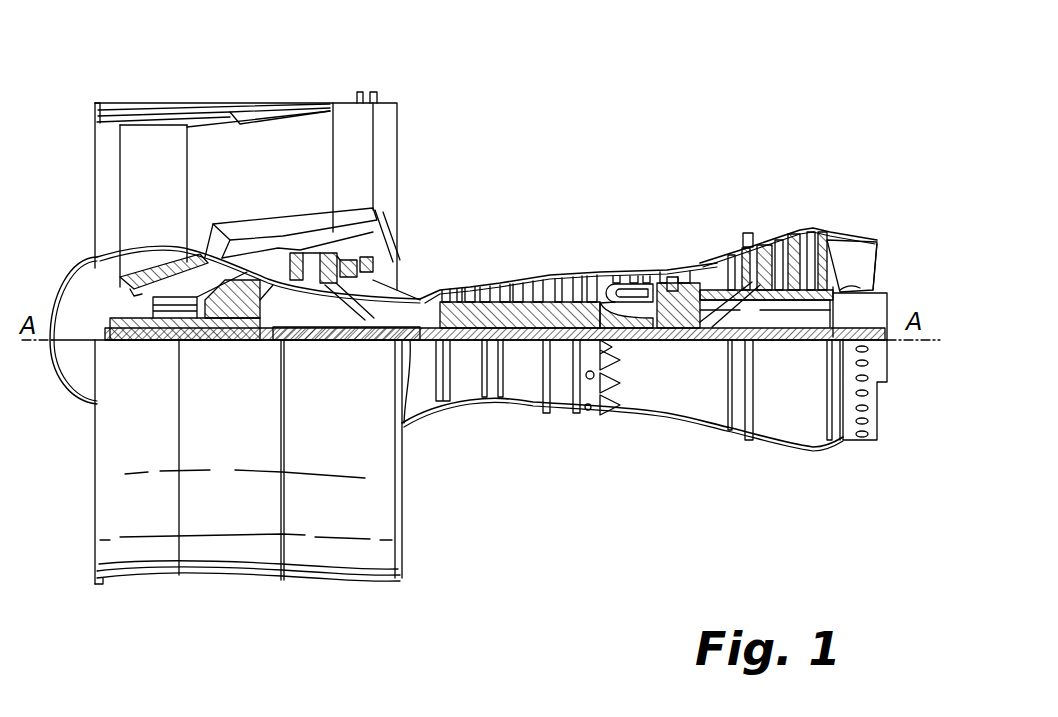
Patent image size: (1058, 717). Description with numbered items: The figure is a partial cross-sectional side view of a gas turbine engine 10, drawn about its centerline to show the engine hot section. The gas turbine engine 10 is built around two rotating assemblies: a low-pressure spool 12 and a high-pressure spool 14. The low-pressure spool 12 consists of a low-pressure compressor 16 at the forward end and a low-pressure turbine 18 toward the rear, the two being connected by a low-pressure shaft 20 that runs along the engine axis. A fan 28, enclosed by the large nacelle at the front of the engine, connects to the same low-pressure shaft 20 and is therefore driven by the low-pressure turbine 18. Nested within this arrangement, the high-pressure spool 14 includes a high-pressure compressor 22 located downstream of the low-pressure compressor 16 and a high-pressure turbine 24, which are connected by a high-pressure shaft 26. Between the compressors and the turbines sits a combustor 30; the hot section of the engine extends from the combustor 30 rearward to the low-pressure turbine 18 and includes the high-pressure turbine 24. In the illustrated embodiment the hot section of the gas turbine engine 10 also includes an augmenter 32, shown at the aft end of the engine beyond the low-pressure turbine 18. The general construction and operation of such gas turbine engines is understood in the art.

The gas turbine engine 10 is at (574, 95).
The low-pressure spool 12 is at (678, 343).
The high-pressure spool 14 is at (537, 297).
The low-pressure compressor 16 is at (343, 250).
The low-pressure turbine 18 is at (831, 216).
The low-pressure shaft 20 is at (723, 342).
The high-pressure compressor 22 is at (482, 268).
The high-pressure turbine 24 is at (679, 263).
The high-pressure shaft 26 is at (425, 342).
The fan 28 is at (157, 142).
The combustor 30 is at (617, 293).
The augmenter 32 is at (886, 266).